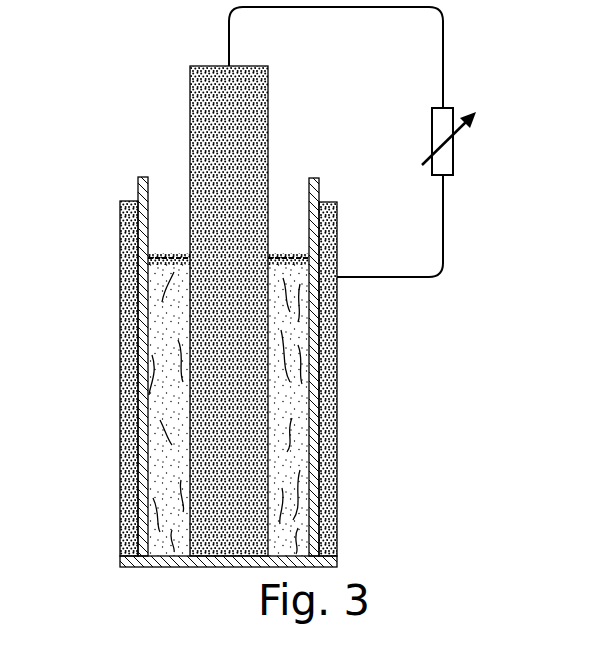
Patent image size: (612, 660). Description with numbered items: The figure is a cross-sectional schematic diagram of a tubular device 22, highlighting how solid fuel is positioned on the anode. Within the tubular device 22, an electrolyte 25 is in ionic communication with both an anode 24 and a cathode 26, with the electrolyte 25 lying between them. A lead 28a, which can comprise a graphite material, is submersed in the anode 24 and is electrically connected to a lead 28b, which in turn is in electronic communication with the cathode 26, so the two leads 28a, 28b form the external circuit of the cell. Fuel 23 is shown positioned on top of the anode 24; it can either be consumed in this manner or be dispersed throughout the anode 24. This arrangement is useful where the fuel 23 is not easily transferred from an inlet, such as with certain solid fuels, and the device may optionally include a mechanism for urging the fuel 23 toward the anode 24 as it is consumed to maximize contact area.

The tubular device 22 is at (264, 287).
The fuel 23 is at (280, 250).
The anode 24 is at (296, 447).
The electrolyte 25 is at (138, 187).
The cathode 26 is at (121, 361).
The lead 28a is at (268, 82).
The lead 28b is at (338, 276).